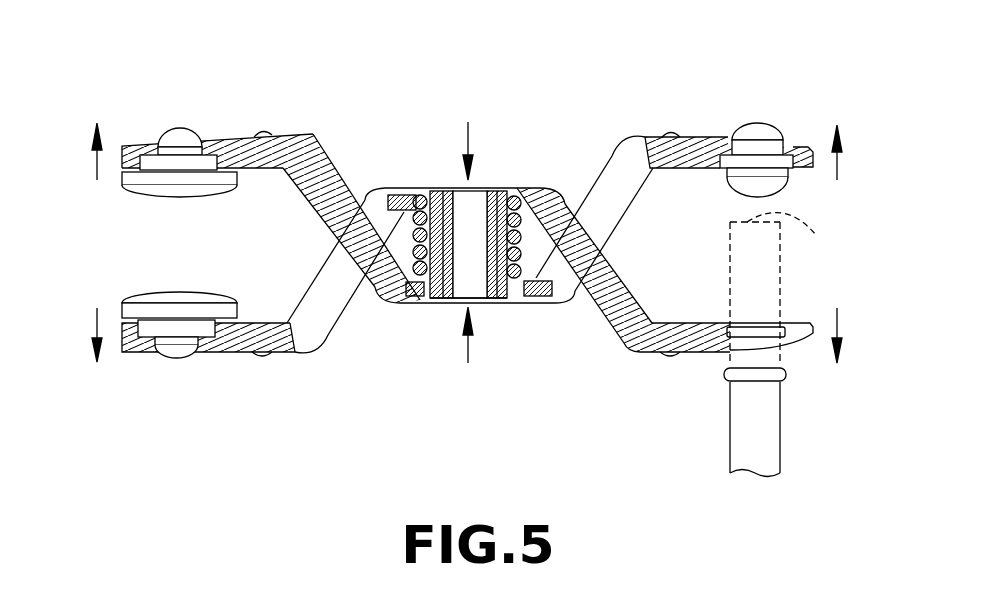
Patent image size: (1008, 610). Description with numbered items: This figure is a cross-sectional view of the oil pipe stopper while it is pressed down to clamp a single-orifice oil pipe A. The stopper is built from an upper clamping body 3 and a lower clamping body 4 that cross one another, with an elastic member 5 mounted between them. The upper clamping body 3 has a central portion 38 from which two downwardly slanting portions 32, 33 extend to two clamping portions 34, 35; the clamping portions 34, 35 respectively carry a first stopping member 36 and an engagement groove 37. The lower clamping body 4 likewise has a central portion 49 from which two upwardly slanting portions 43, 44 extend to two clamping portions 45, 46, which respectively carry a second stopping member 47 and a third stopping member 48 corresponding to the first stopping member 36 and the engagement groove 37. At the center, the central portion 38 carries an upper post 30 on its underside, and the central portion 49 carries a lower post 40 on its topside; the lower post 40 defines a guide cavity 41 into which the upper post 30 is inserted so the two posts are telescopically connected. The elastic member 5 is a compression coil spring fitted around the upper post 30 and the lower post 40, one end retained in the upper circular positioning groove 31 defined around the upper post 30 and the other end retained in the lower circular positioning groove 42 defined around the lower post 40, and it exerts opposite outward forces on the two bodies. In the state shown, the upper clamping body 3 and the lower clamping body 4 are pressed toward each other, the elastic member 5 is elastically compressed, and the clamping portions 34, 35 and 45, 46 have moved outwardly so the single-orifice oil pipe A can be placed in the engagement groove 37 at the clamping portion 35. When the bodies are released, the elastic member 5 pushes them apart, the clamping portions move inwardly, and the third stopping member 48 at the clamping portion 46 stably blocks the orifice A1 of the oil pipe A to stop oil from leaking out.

The upper clamping body 3 is at (537, 190).
The lower clamping body 4 is at (405, 307).
The elastic member 5 is at (560, 217).
The upper post 30 is at (486, 193).
The upper circular positioning groove 31 is at (399, 197).
The downwardly slanting portion 32 is at (333, 307).
The downwardly slanting portion 33 is at (598, 312).
The clamping portion 34 is at (232, 350).
The clamping portion 35 is at (702, 345).
The first stopping member 36 is at (155, 322).
The engagement groove 37 is at (795, 338).
The central portion 38 is at (451, 192).
The lower post 40 is at (500, 283).
The guide cavity 41 is at (487, 207).
The lower circular positioning groove 42 is at (538, 283).
The upwardly slanting portion 43 is at (332, 188).
The upwardly slanting portion 44 is at (613, 197).
The clamping portion 45 is at (238, 140).
The clamping portion 46 is at (695, 142).
The second stopping member 47 is at (156, 178).
The third stopping member 48 is at (752, 183).
The central portion 49 is at (447, 303).
The single-orifice oil pipe A is at (727, 432).
The orifice A1 is at (795, 234).